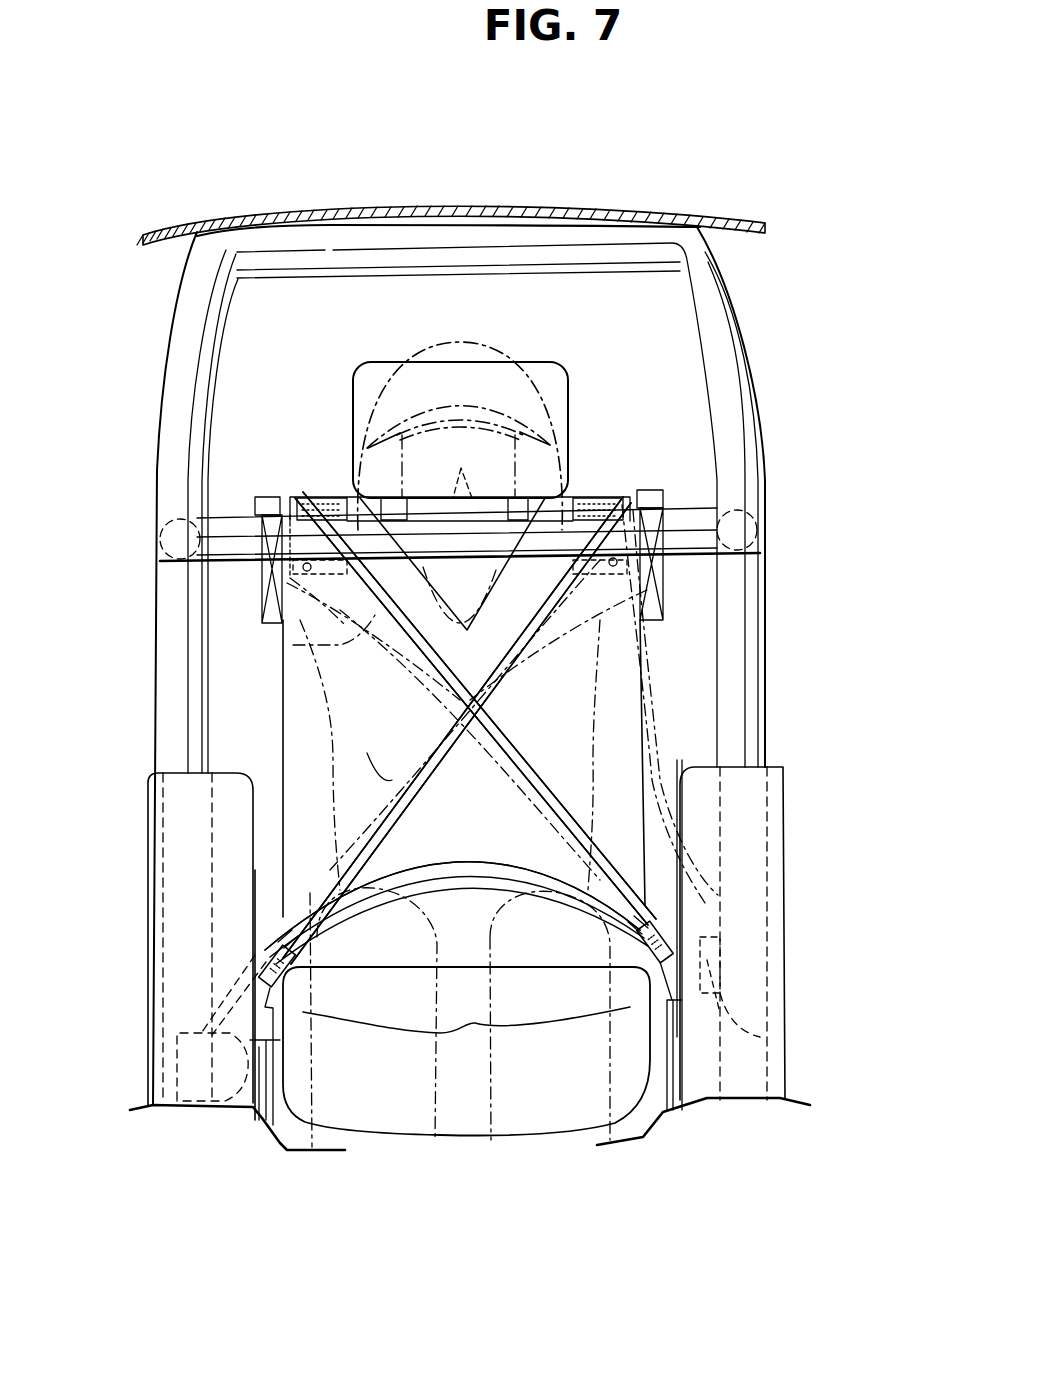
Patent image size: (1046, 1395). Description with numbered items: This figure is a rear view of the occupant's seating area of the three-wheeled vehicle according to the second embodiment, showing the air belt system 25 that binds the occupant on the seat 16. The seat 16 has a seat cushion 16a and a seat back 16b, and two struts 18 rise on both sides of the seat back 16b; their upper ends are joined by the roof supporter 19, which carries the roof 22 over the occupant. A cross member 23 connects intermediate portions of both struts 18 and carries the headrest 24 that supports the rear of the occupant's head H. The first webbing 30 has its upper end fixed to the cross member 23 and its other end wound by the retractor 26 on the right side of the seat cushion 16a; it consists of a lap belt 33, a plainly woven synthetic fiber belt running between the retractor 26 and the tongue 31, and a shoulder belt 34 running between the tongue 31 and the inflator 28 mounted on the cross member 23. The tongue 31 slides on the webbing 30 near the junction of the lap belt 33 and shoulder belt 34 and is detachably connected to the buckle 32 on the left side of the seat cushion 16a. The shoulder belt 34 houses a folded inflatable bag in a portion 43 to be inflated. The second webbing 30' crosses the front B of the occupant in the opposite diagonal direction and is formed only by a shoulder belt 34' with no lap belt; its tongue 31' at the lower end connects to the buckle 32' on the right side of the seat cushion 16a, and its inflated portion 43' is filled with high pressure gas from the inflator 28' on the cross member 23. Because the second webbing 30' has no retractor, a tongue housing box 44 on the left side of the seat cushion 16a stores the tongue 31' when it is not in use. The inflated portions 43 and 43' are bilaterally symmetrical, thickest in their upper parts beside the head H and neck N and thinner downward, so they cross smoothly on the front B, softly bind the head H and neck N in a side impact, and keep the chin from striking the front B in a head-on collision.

The seat 16 is at (662, 758).
The seat cushion 16a is at (457, 1117).
The seat back 16b is at (293, 687).
The struts 18 is at (175, 357).
The roof supporter 19 is at (372, 262).
The roof 22 is at (440, 205).
The cross member 23 is at (684, 508).
The headrest 24 is at (563, 385).
The air belt system 25 is at (352, 677).
The retractor 26 is at (198, 1105).
The inflator 28 is at (188, 560).
The inflator 28' is at (738, 563).
The webbing 30 is at (460, 721).
The second webbing 30' is at (457, 730).
The tongue 31 is at (596, 938).
The tongue 31' is at (341, 935).
The buckle 32 is at (747, 946).
The buckle 32' is at (182, 990).
The lap belt 33 is at (530, 867).
The shoulder belt 34 is at (475, 708).
The shoulder belt 34' is at (457, 730).
The portion to be inflated 43 is at (298, 584).
The inflated portion 43' is at (645, 700).
The tongue housing box 44 is at (760, 1037).
The head H is at (503, 345).
The neck N is at (512, 557).
The front B is at (632, 727).